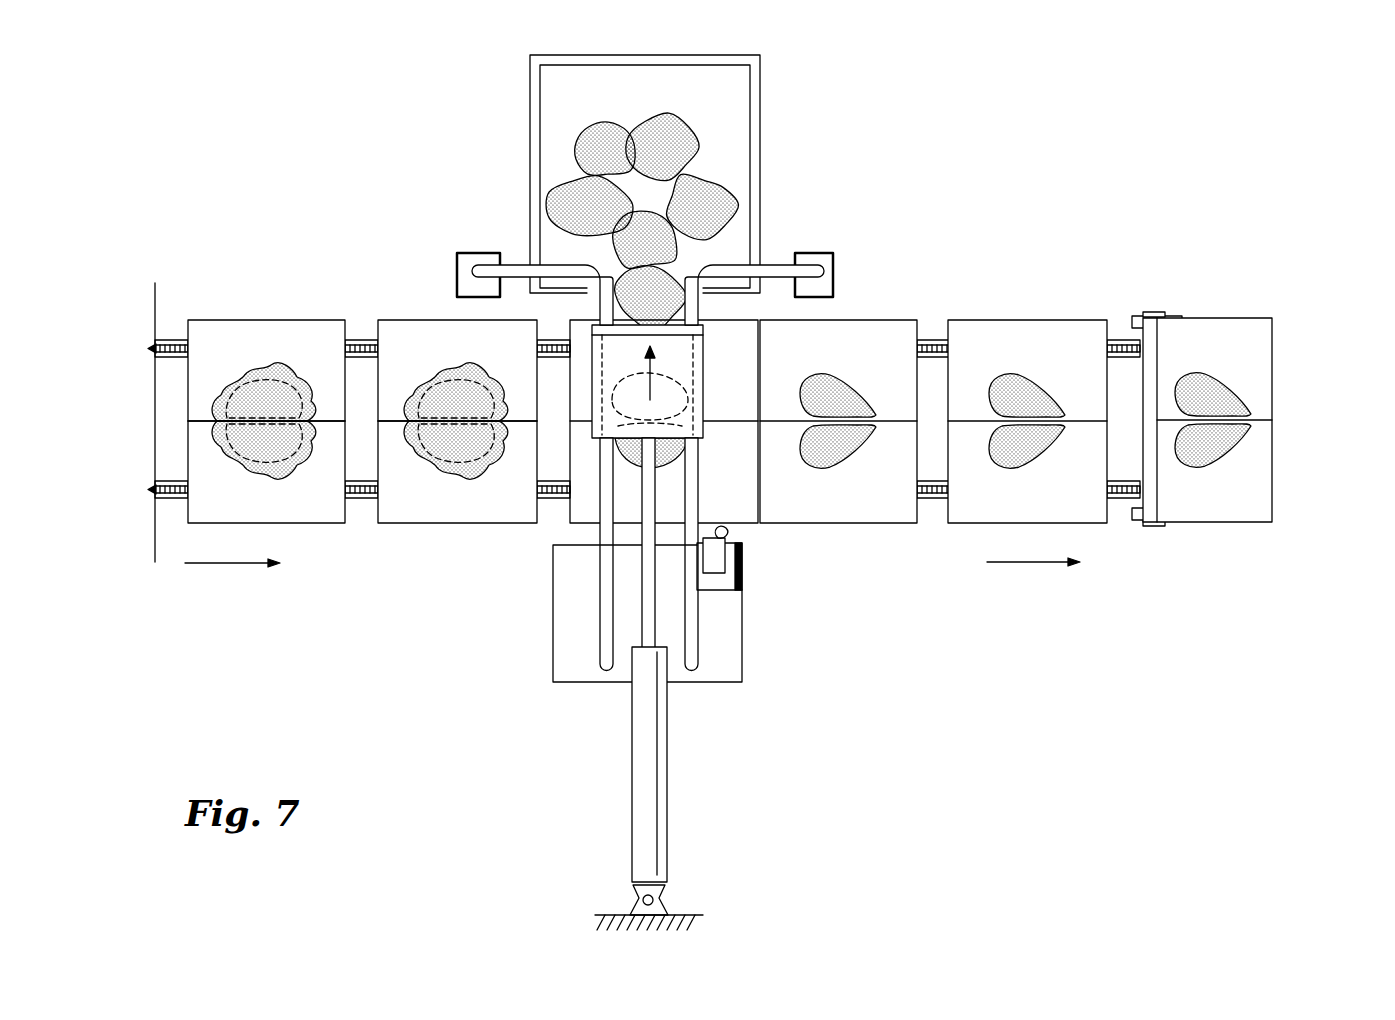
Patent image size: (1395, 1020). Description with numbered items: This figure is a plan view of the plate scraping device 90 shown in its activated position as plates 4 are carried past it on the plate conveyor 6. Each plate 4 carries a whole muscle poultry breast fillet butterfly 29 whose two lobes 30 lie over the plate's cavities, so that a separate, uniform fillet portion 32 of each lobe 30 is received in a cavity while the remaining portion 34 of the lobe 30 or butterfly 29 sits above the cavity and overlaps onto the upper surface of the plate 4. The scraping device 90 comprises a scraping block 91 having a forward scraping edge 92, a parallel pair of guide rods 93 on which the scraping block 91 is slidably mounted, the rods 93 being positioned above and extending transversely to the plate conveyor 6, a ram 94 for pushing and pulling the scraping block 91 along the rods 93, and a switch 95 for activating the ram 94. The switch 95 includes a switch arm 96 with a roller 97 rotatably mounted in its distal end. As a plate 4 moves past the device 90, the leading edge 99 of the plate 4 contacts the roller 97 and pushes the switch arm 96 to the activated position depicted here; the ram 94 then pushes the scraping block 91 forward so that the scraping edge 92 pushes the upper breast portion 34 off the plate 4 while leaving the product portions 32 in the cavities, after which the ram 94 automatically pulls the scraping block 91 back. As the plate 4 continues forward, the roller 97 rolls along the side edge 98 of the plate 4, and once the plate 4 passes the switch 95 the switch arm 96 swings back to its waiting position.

The plate 4 is at (218, 325).
The plate conveyor 6 is at (935, 342).
The breast fillet butterfly 29 is at (215, 438).
The poultry breast fillet lobe 30 is at (284, 378).
The fillet portion 32 is at (842, 388).
The remaining portion 34 is at (662, 140).
The plate scraping device 90 is at (540, 643).
The scraping block 91 is at (673, 357).
The forward scraping edge 92 is at (592, 328).
The guide rods 93 is at (603, 600).
The ram 94 is at (655, 802).
The switch 95 is at (742, 568).
The switch arm 96 is at (730, 538).
The roller 97 is at (730, 532).
The side edge 98 is at (575, 522).
The leading edge 99 is at (727, 383).